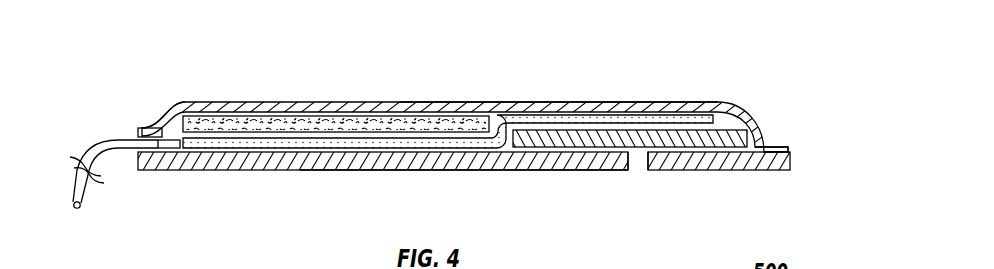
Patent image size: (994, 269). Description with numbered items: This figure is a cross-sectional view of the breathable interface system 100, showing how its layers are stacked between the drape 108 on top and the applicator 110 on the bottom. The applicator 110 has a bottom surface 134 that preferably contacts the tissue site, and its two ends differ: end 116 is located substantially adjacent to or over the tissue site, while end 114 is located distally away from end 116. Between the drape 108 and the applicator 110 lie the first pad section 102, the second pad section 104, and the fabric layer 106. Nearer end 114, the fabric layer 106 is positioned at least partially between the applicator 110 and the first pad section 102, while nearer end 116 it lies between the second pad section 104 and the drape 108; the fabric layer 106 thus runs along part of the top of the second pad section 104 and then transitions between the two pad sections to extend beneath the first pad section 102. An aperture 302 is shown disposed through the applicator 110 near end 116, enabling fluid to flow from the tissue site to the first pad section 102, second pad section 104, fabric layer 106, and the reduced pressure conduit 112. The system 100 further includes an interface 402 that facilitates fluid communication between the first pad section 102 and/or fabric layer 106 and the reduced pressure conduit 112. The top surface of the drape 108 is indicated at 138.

The breathable interface system 100 is at (707, 38).
The first pad section 102 is at (217, 120).
The second pad section 104 is at (727, 128).
The fabric layer 106 is at (260, 148).
The drape 108 is at (280, 103).
The applicator 110 is at (197, 171).
The reduced pressure conduit 112 is at (86, 192).
The end 114 is at (151, 122).
The end 116 is at (779, 133).
The bottom surface 134 is at (399, 178).
The top surface 138 is at (514, 94).
The aperture 302 is at (639, 174).
The interface 402 is at (162, 125).